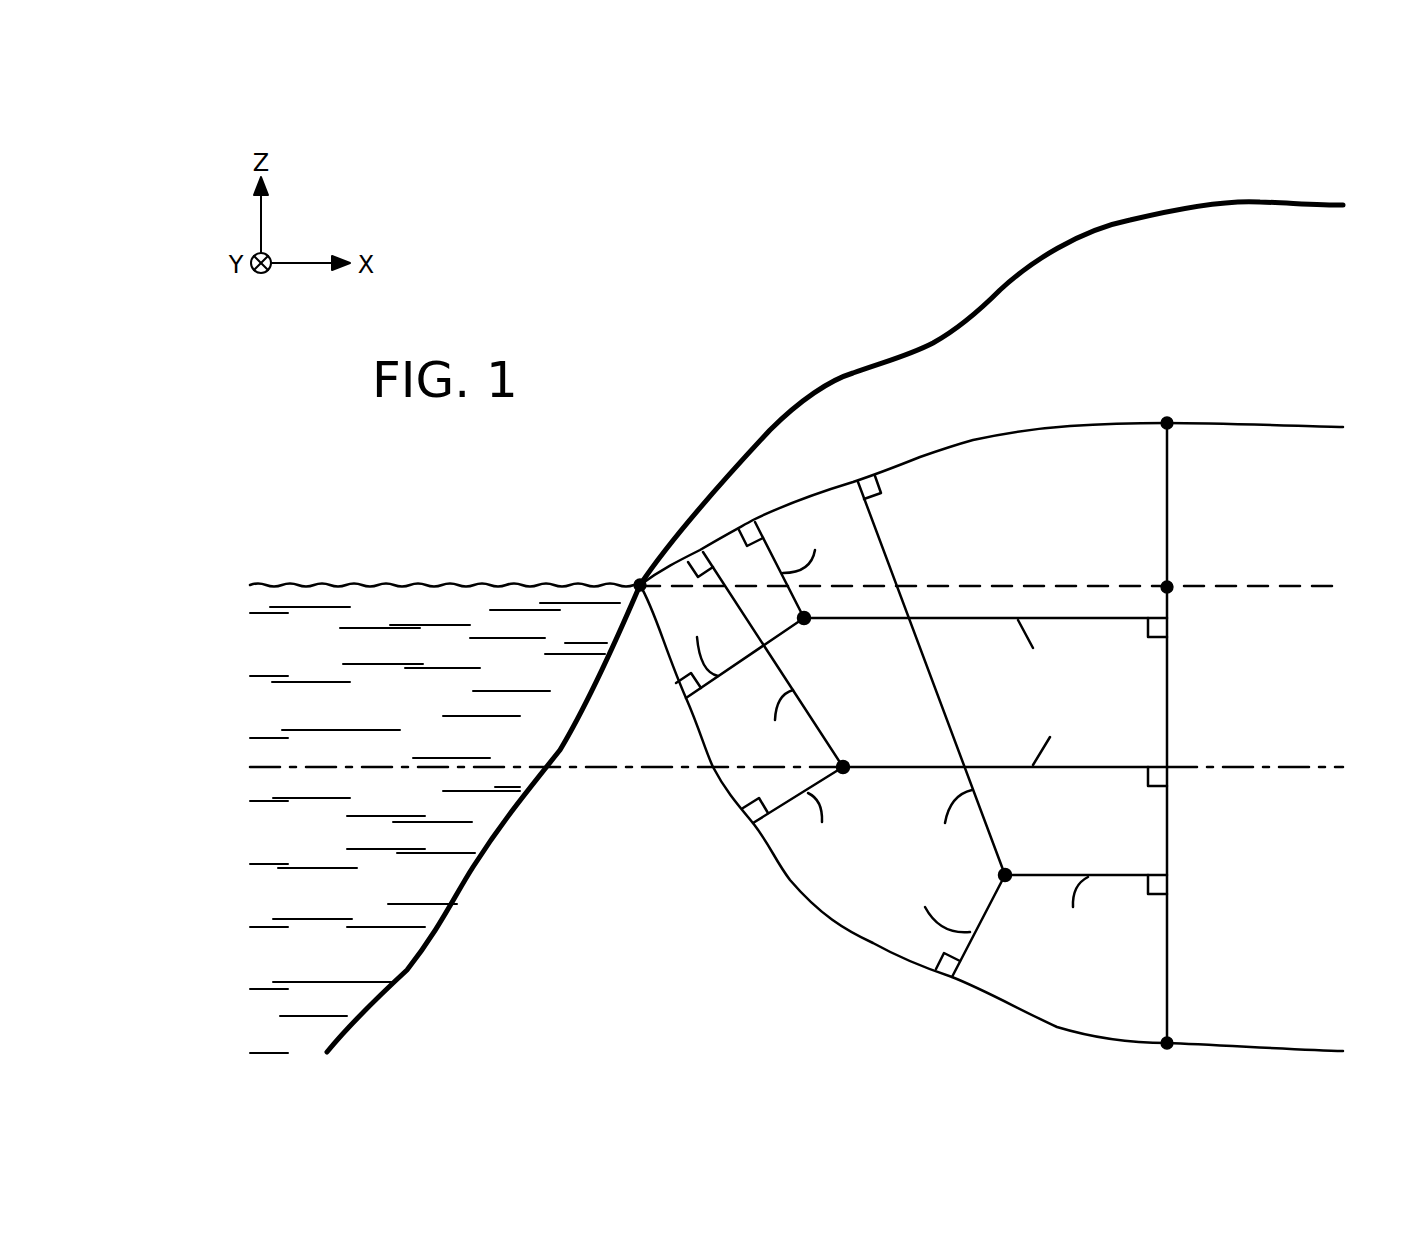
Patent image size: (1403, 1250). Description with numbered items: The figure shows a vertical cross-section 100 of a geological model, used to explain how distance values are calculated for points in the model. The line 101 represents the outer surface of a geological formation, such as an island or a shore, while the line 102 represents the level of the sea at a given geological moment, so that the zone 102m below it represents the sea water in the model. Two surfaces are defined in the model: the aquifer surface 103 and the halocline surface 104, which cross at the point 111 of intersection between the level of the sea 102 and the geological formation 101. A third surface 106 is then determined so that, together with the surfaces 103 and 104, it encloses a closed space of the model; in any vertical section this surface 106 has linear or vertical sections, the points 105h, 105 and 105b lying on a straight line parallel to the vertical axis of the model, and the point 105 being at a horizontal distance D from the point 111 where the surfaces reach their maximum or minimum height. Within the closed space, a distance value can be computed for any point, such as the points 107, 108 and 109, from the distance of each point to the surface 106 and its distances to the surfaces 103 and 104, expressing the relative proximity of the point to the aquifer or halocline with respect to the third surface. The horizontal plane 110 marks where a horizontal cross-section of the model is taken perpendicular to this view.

The vertical cross-section 100 is at (648, 259).
The outer surface of the geological formation 101 is at (1005, 269).
The level of the sea 102 is at (364, 583).
The sea water zone 102m is at (453, 613).
The aquifer surface 103 is at (1072, 423).
The halocline surface 104 is at (872, 942).
The point 105 is at (1170, 585).
The upper point 105h is at (1167, 423).
The lower point 105b is at (1170, 1040).
The third surface 106 is at (1168, 705).
The point 107 is at (1011, 872).
The point 108 is at (849, 765).
The point 109 is at (807, 623).
The plane 110 is at (350, 765).
The point of intersection 111 is at (640, 585).